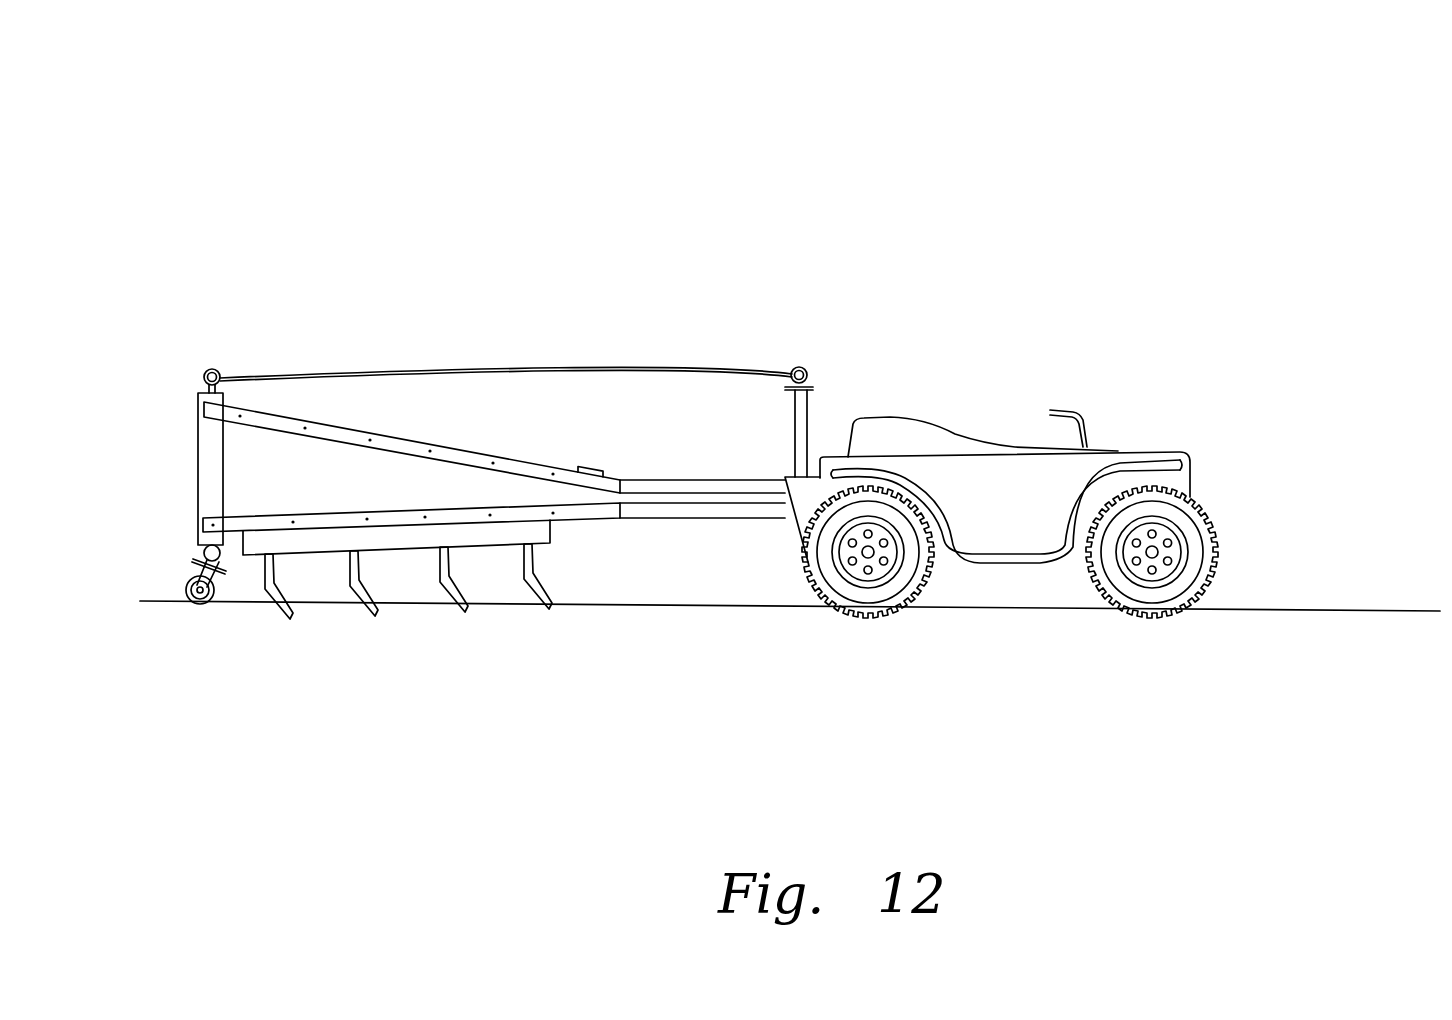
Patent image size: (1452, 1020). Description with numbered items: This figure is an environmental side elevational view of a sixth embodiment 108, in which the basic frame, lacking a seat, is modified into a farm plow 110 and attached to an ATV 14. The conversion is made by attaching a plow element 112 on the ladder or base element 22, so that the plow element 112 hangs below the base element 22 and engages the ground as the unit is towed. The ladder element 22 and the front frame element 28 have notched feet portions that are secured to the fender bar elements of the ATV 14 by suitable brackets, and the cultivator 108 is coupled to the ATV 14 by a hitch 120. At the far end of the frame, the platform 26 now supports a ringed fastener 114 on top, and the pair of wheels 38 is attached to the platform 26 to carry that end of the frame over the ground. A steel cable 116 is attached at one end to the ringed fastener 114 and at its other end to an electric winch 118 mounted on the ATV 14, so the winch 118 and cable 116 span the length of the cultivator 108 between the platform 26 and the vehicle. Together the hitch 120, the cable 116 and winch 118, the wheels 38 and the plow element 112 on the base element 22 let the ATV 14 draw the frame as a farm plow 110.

The sixth embodiment (cultivator) 108 is at (677, 262).
The ATV 14 is at (1028, 515).
The platform 26 is at (209, 462).
The ringed fastener 114 is at (212, 368).
The steel cable 116 is at (518, 366).
The electric winch 118 is at (808, 372).
The farm plow 110 is at (402, 416).
The front frame element 28 is at (525, 469).
The ladder element 22 is at (390, 512).
The hitch 120 is at (730, 483).
The plow element 112 is at (552, 576).
The pair of wheels 38 is at (193, 583).